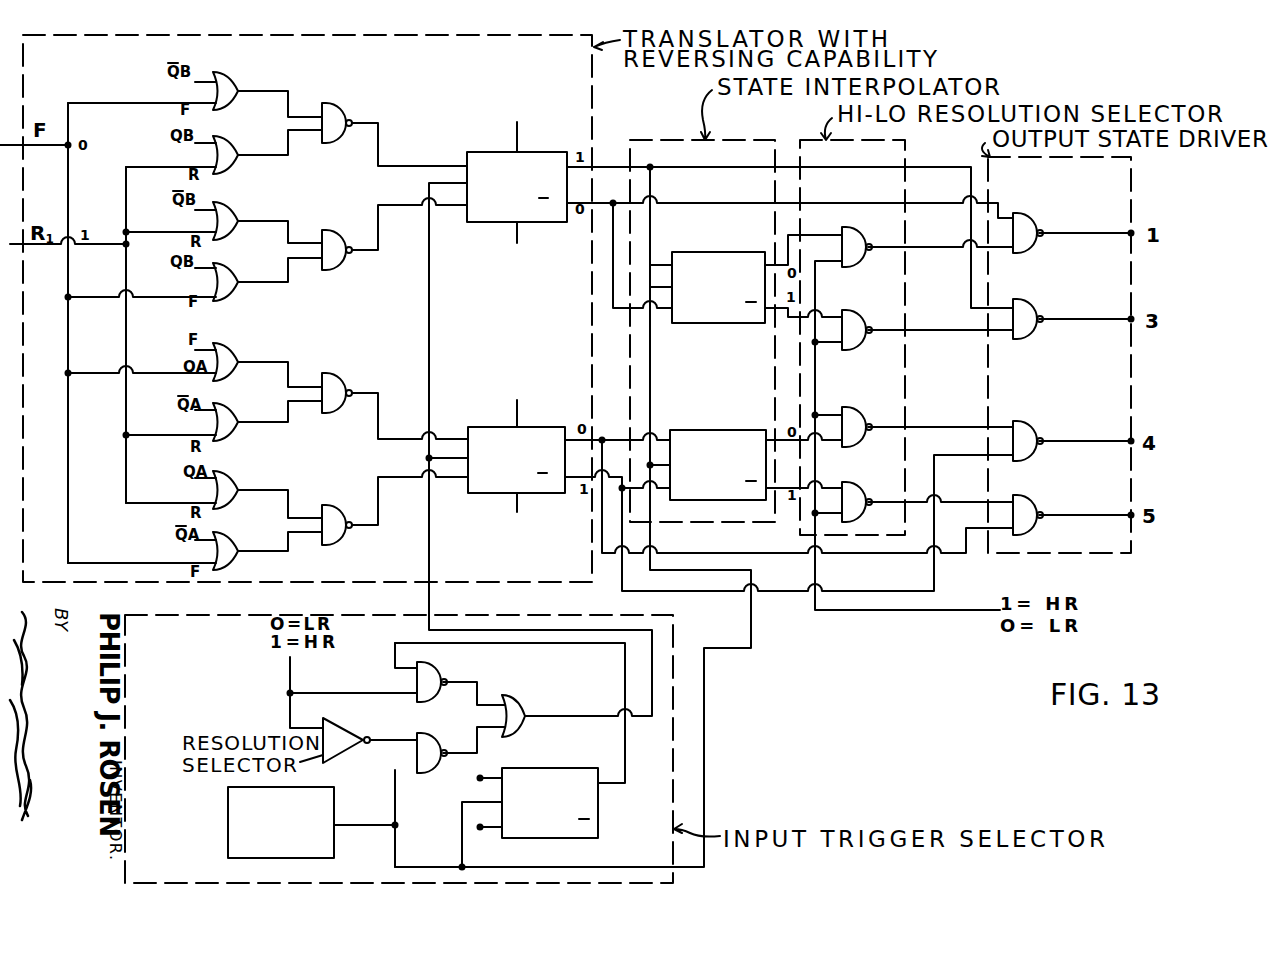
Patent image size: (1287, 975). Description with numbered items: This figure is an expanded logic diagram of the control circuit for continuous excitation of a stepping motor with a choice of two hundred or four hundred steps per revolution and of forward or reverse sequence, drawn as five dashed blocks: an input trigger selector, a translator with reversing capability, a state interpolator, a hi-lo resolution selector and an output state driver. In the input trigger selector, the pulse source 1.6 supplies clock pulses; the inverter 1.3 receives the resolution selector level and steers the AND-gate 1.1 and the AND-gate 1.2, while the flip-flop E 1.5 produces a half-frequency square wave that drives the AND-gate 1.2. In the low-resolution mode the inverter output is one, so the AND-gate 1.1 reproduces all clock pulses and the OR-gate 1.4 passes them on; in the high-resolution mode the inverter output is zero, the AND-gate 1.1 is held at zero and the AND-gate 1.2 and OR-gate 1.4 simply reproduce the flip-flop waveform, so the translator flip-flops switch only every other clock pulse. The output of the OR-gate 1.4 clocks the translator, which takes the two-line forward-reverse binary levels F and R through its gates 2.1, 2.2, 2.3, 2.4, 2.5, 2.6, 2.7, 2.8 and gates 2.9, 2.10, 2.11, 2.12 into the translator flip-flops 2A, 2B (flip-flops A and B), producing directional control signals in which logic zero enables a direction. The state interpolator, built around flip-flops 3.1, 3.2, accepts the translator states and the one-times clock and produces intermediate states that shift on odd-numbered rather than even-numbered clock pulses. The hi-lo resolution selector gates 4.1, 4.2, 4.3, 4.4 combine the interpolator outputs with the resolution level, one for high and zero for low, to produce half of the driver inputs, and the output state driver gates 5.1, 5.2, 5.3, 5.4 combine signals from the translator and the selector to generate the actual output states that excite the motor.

The AND-gate 1.1 is at (442, 750).
The AND-gate 1.2 is at (443, 678).
The inverter 1.3 is at (351, 734).
The OR-gate 1.4 is at (530, 714).
The flip-flop E 1.5 is at (550, 792).
The pulse source 1.6 is at (298, 822).
The OR gate 2.1 is at (242, 551).
The OR gate 2.2 is at (242, 490).
The OR gate 2.3 is at (242, 422).
The OR gate 2.4 is at (242, 362).
The OR gate 2.5 is at (242, 282).
The OR gate 2.6 is at (242, 221).
The OR gate 2.7 is at (242, 153).
The OR gate 2.8 is at (242, 89).
The NAND gate 2.9 is at (350, 122).
The NAND gate 2.10 is at (356, 253).
The NAND gate 2.11 is at (356, 393).
The NAND gate 2.12 is at (356, 527).
The flip-flop B 2A is at (516, 449).
The flip-flop A 2B is at (517, 175).
The flip-flop C 3.1 is at (718, 278).
The flip-flop D 3.2 is at (718, 455).
The NAND gate of hi-lo resolution selector 4.1 is at (869, 245).
The NAND gate of hi-lo resolution selector 4.2 is at (869, 328).
The NAND gate of hi-lo resolution selector 4.3 is at (869, 425).
The NAND gate of hi-lo resolution selector 4.4 is at (869, 502).
The NAND gate of output state driver 5.1 is at (1041, 230).
The NAND gate of output state driver 5.2 is at (1043, 318).
The NAND gate of output state driver 5.3 is at (1041, 439).
The NAND gate of output state driver 5.4 is at (1041, 513).